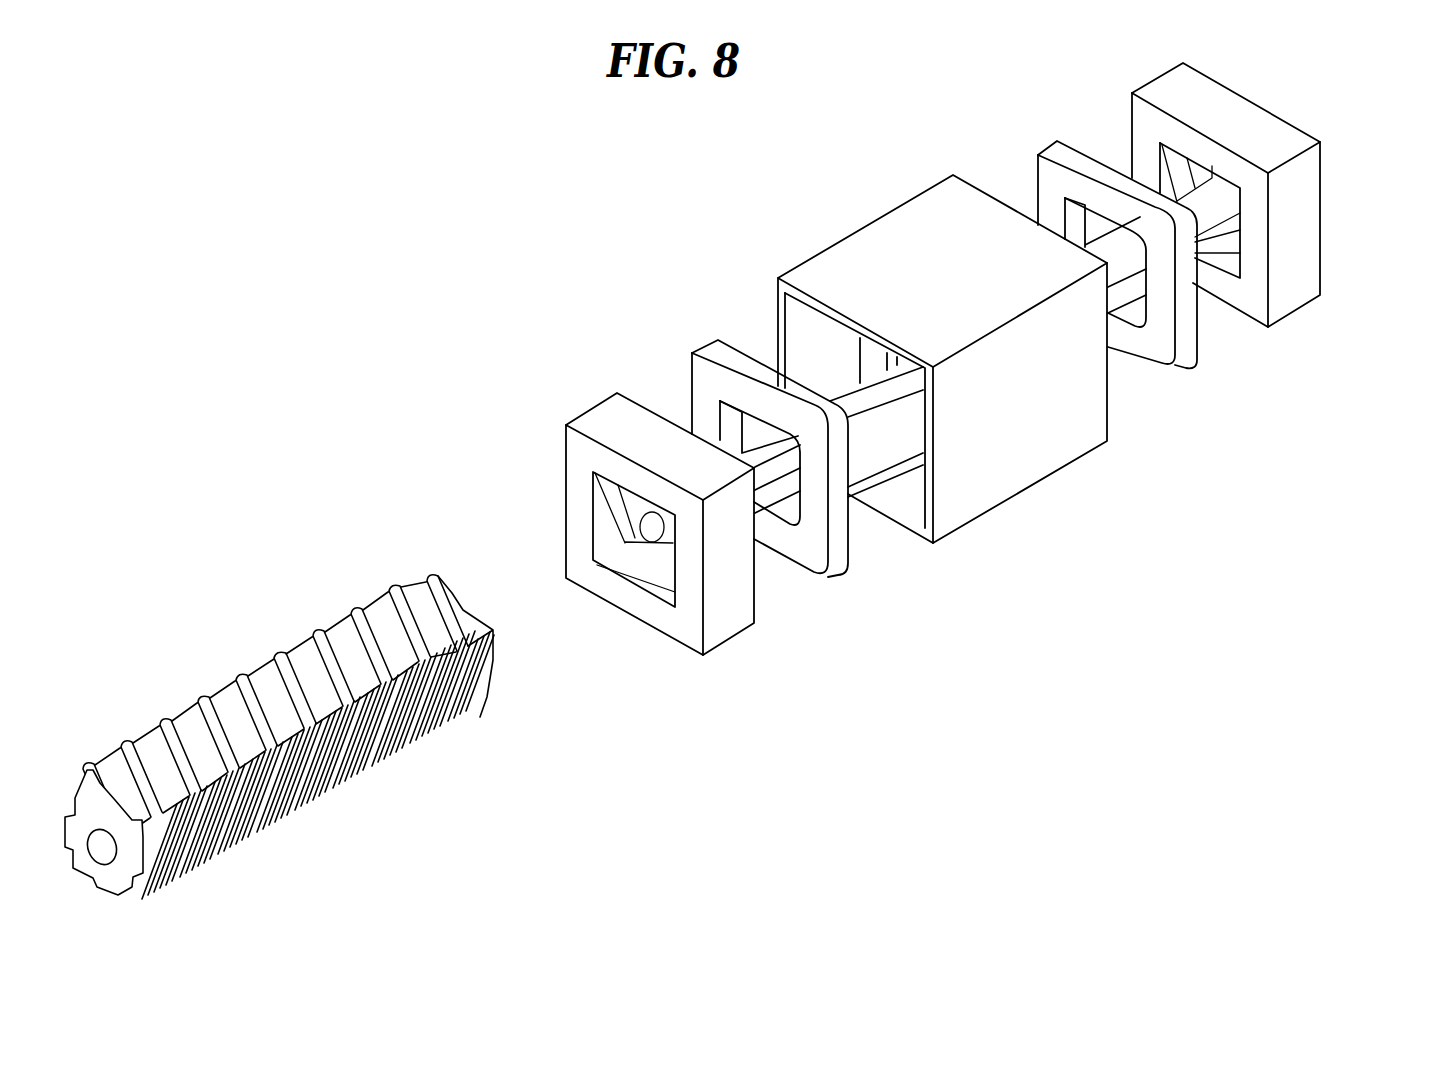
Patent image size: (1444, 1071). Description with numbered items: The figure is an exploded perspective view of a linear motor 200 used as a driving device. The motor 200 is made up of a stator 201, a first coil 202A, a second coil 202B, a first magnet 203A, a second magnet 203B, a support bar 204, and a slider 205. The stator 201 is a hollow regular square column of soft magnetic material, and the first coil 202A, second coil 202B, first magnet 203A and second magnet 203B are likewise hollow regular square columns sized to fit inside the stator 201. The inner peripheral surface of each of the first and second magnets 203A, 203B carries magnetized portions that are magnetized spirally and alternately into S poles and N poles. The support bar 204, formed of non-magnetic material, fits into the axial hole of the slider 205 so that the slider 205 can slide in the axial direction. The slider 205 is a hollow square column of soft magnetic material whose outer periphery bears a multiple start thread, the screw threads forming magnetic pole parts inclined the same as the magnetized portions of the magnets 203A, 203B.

The motor 200 is at (783, 152).
The stator 201 is at (1013, 455).
The first coil 202A is at (838, 548).
The second coil 202B is at (1183, 350).
The first magnet 203A is at (723, 617).
The second magnet 203B is at (1295, 290).
The support bar 204 is at (853, 403).
The slider 205 is at (303, 662).